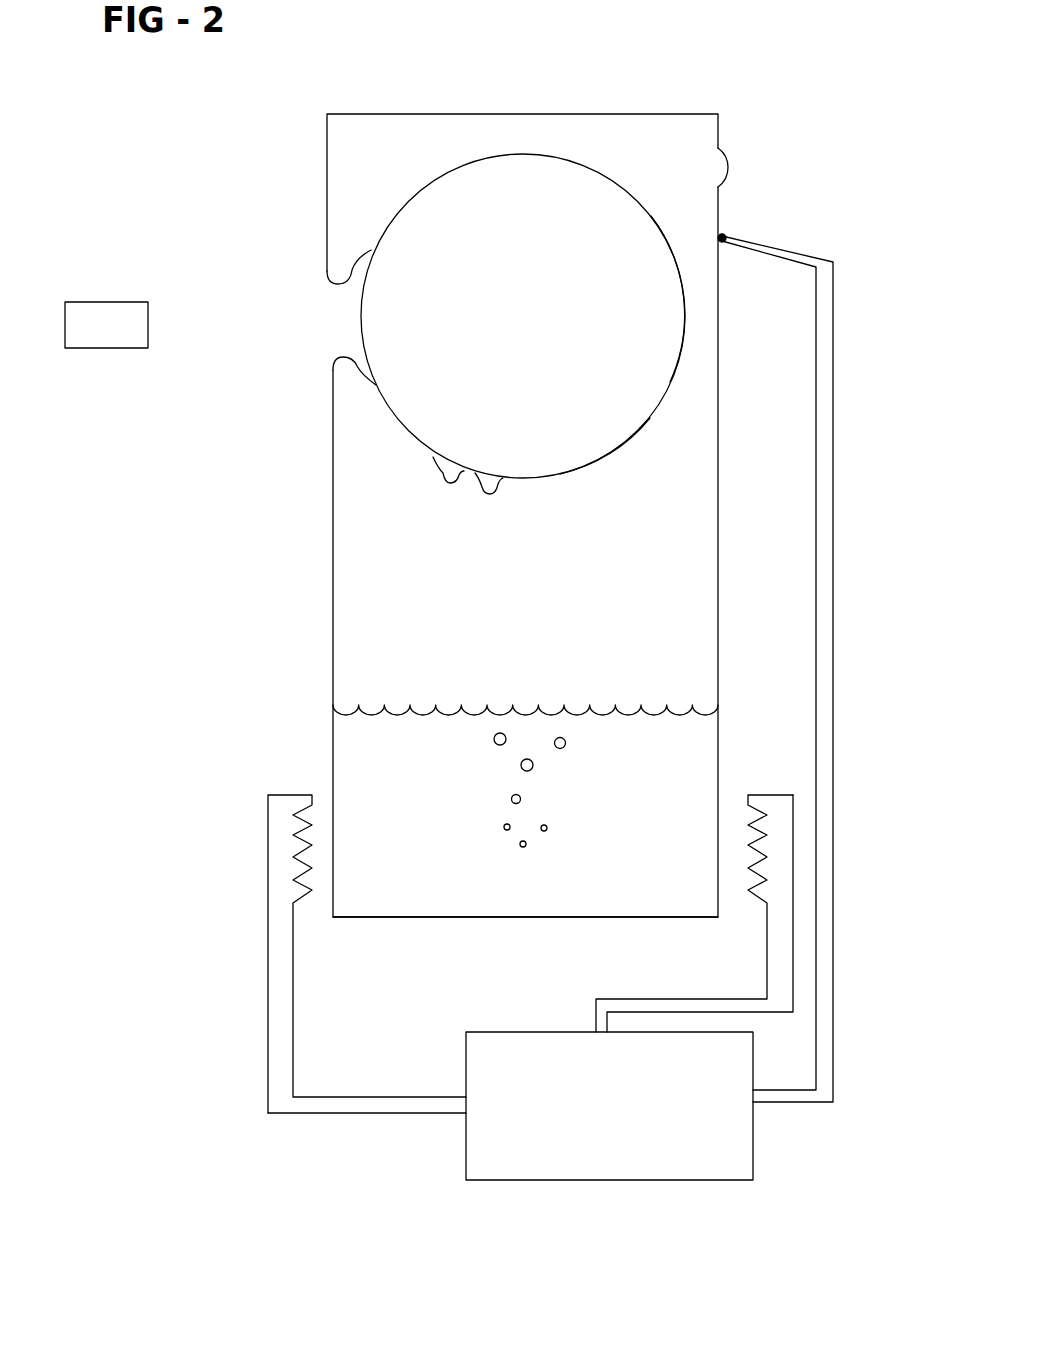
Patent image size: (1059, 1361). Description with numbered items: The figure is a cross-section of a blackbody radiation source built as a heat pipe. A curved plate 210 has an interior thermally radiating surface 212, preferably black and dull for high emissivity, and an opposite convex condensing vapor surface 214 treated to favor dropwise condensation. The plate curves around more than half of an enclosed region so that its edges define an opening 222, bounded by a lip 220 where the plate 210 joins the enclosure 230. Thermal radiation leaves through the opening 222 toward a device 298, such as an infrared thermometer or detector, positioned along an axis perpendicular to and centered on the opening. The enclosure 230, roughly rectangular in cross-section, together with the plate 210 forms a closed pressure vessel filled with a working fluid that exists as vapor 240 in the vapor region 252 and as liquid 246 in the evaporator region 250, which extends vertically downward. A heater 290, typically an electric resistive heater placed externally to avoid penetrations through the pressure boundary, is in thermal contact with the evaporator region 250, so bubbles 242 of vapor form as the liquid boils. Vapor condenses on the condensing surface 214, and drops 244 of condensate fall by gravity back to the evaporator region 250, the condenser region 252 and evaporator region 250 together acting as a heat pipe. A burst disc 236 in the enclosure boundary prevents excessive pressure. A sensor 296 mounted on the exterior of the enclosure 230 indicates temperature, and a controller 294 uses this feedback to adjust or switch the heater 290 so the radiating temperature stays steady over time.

The plate 210 is at (427, 442).
The thermally radiating surface 212 is at (603, 448).
The condensing vapor surface 214 is at (593, 463).
The lip 220 is at (326, 283).
The opening 222 is at (328, 315).
The enclosure 230 is at (511, 110).
The burst disc 236 is at (732, 157).
The vapor 240 is at (663, 150).
The bubbles 242 is at (538, 767).
The drops 244 is at (472, 487).
The liquid 246 is at (410, 877).
The evaporator region 250 is at (383, 761).
The vapor region 252 is at (630, 150).
The heater 290 is at (313, 817).
The controller 294 is at (466, 1160).
The sensor 296 is at (724, 233).
The device 298 is at (88, 352).